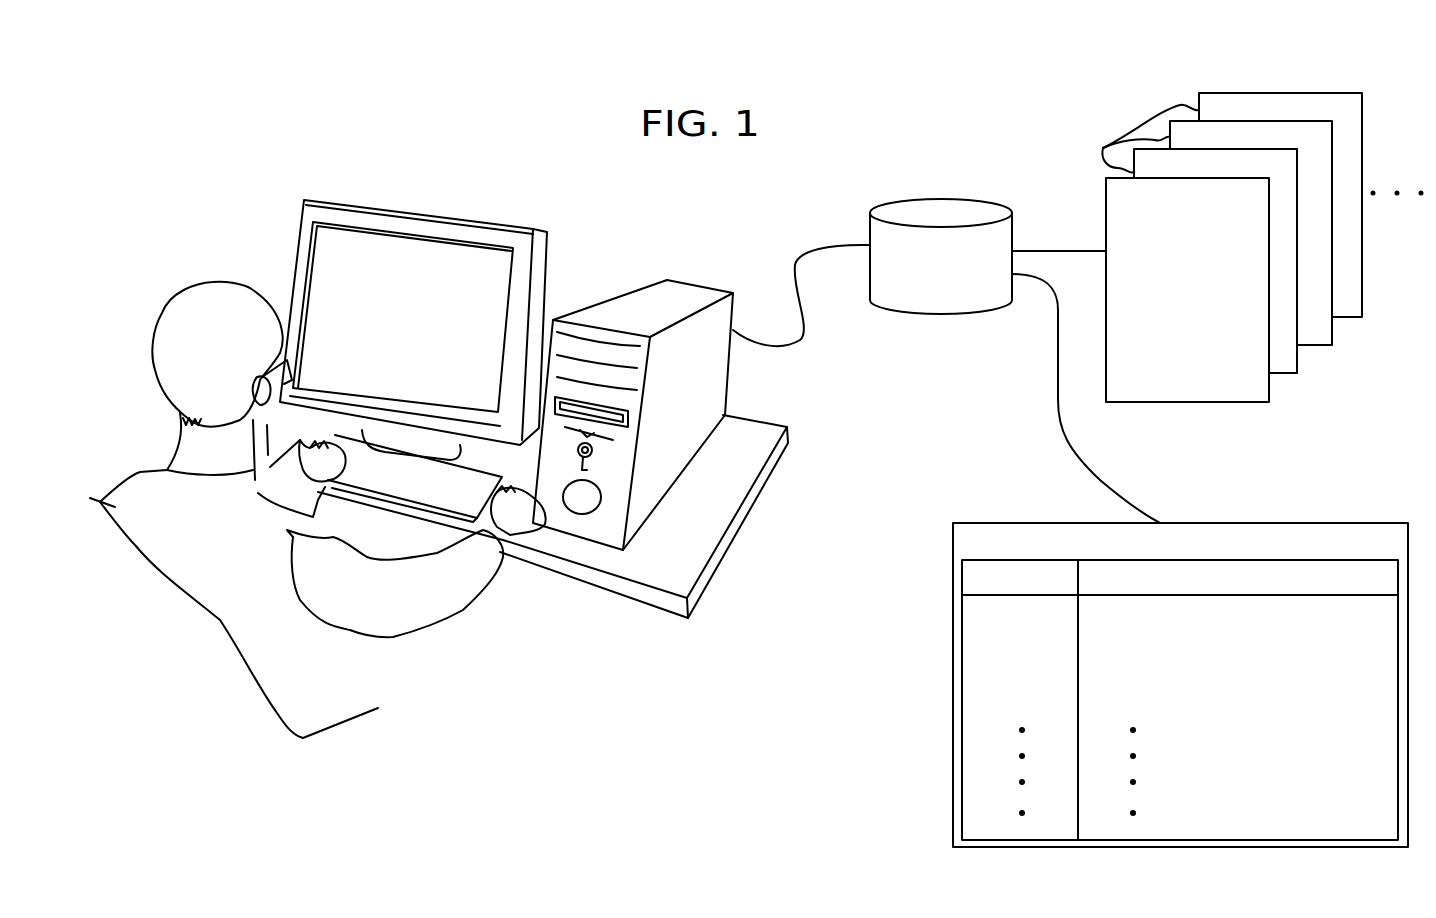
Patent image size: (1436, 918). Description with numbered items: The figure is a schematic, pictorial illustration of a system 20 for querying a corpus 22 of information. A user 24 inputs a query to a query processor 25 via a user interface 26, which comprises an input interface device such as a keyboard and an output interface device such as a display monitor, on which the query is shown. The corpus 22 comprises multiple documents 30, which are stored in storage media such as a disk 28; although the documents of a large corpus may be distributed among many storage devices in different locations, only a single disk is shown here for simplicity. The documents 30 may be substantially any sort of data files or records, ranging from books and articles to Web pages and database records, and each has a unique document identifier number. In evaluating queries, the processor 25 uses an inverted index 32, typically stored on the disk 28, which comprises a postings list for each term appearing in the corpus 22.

The system 20 is at (214, 150).
The corpus 22 is at (1072, 111).
The user 24 is at (186, 300).
The query processor 25 is at (633, 305).
The user interface 26 is at (338, 205).
The disk 28 is at (912, 202).
The documents 30 is at (1138, 139).
The inverted index 32 is at (953, 604).